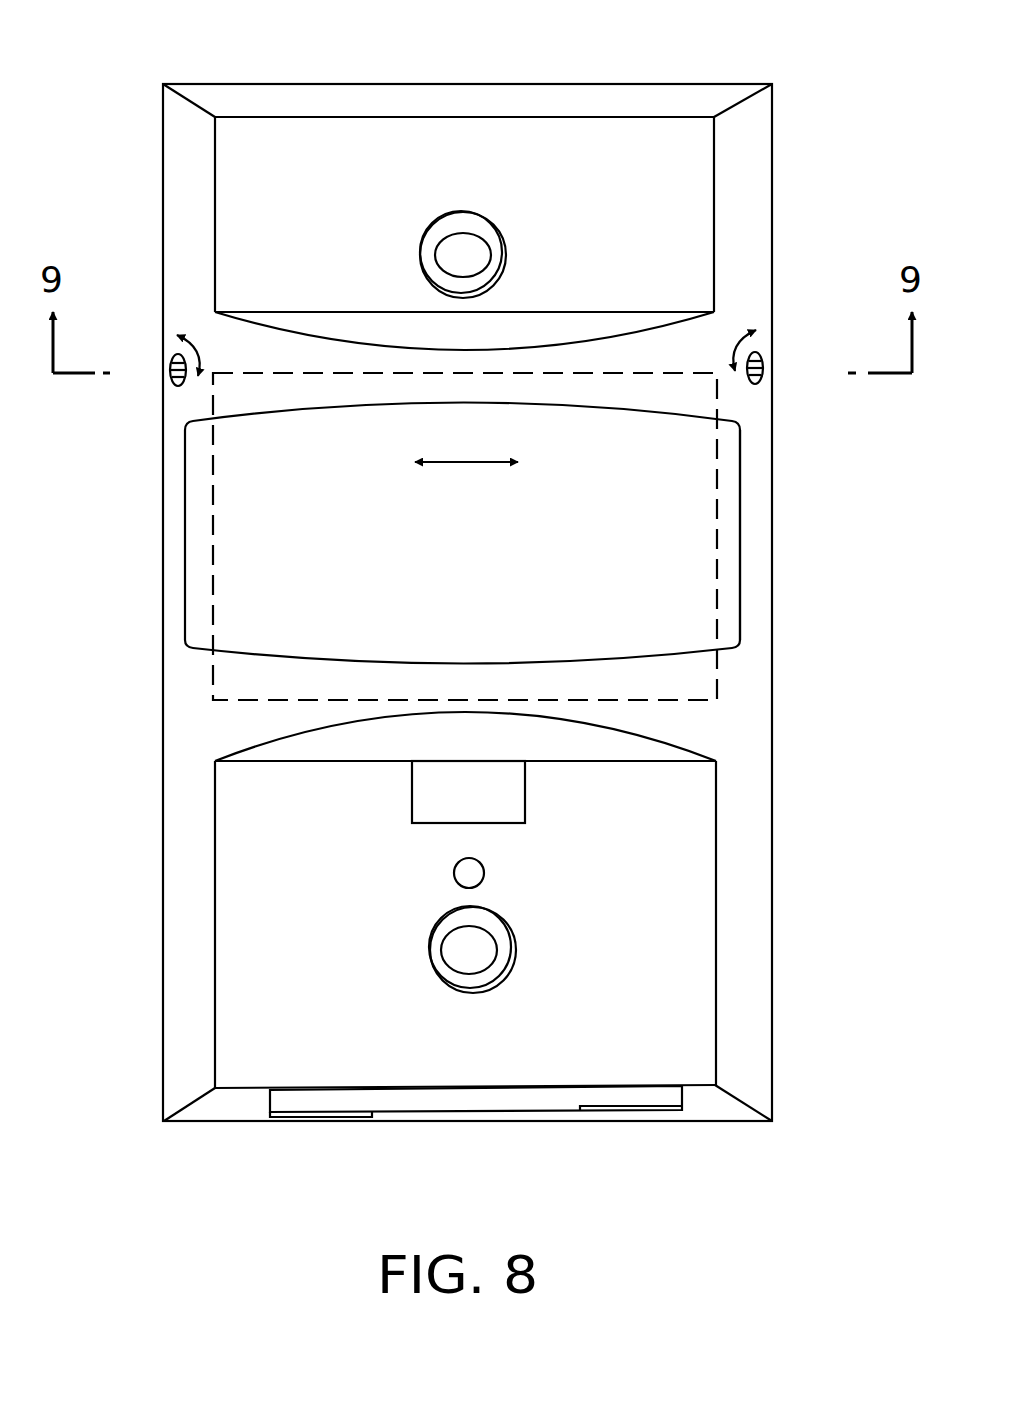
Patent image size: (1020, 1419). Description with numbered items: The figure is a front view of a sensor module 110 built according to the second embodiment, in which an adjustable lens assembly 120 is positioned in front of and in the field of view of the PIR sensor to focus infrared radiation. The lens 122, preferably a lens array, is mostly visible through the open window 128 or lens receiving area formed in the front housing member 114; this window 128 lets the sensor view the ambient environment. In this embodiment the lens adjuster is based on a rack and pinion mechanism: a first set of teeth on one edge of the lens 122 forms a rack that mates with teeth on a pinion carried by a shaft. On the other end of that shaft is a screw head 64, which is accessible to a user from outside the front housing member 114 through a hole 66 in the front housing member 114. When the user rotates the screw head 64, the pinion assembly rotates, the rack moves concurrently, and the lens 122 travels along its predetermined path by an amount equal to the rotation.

The sensor module 110 is at (803, 64).
The front housing member 114 is at (772, 170).
The screw head 64 is at (175, 356).
The hole 66 is at (181, 390).
The lens 122 is at (645, 508).
The adjustable lens assembly 120 is at (748, 547).
The window 128 is at (742, 590).